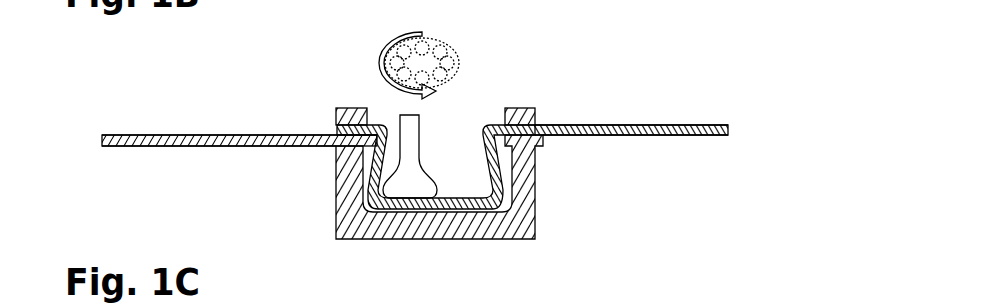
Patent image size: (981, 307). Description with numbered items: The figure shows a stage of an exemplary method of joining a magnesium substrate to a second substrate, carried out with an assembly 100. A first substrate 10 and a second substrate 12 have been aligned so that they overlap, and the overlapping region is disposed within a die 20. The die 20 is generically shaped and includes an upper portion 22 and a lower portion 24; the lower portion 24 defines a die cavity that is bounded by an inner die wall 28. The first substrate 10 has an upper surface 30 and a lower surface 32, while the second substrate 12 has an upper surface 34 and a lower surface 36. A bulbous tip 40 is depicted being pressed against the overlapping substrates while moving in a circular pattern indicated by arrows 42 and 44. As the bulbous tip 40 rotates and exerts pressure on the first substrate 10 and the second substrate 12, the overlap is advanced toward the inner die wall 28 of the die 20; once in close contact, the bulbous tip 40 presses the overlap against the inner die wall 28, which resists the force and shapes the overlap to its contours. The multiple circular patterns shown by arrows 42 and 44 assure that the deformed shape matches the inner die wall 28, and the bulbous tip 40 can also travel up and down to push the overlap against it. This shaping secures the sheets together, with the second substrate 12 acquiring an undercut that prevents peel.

The first substrate 10 is at (147, 135).
The upper surface 30 is at (213, 135).
The lower surface 32 is at (207, 147).
The second substrate 12 is at (715, 125).
The upper surface 34 is at (673, 125).
The lower surface 36 is at (673, 136).
The die 20 is at (346, 108).
The upper portion 22 is at (523, 109).
The lower portion 24 is at (518, 185).
The inner die wall 28 is at (476, 208).
The bulbous tip 40 is at (413, 142).
The arrow 42 is at (393, 38).
The arrow 44 is at (456, 68).
The assembly 100 is at (675, 47).